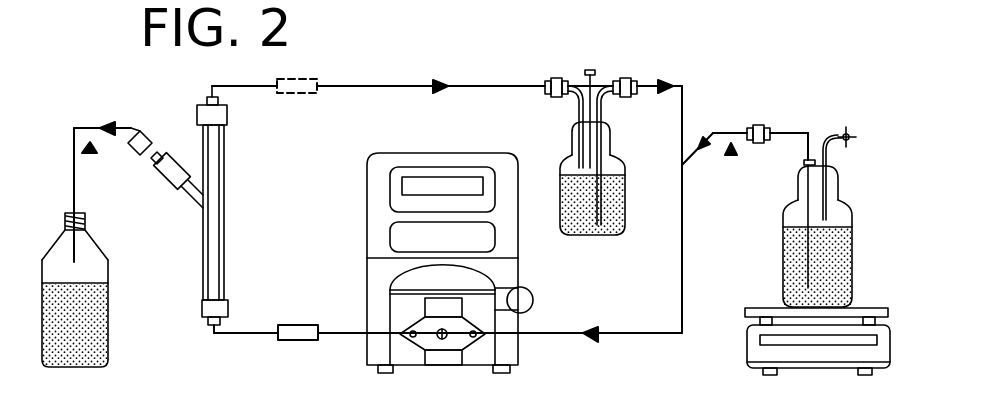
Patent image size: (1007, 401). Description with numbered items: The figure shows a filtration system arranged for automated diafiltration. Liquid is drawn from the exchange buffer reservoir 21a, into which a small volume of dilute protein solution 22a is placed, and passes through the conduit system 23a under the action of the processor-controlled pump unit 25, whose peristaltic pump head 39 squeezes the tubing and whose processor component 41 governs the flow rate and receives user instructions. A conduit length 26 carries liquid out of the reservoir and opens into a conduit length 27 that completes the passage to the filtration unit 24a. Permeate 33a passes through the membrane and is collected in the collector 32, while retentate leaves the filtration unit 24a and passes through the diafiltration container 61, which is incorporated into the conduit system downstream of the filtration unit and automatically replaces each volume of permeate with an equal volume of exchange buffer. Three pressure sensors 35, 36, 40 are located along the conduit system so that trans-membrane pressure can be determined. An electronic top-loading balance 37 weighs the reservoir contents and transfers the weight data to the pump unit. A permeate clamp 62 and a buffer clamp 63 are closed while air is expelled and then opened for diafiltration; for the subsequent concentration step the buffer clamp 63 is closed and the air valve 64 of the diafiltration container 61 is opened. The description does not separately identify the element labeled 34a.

The exchange buffer reservoir 21a is at (795, 213).
The dilute protein solution 22a is at (798, 250).
The conduit system 23a is at (502, 78).
The filtration unit 24a is at (227, 180).
The processor-controlled pump unit 25 is at (540, 247).
The conduit length 26 is at (682, 292).
The conduit length 27 is at (248, 335).
The collector 32 is at (95, 267).
The permeate 33a is at (87, 317).
The column outlet line 34a is at (392, 88).
The pressure sensor 35 is at (300, 325).
The second pressure sensor 36 is at (316, 79).
The electronic top-loading balance 37 is at (757, 353).
The peristaltic pump head 39 is at (473, 341).
The third pressure sensor 40 is at (140, 152).
The processor component 41 is at (580, 398).
The diafiltration container 61 is at (560, 190).
The permeate clamp 62 is at (91, 110).
The buffer clamp 63 is at (733, 110).
The air valve 64 is at (600, 80).